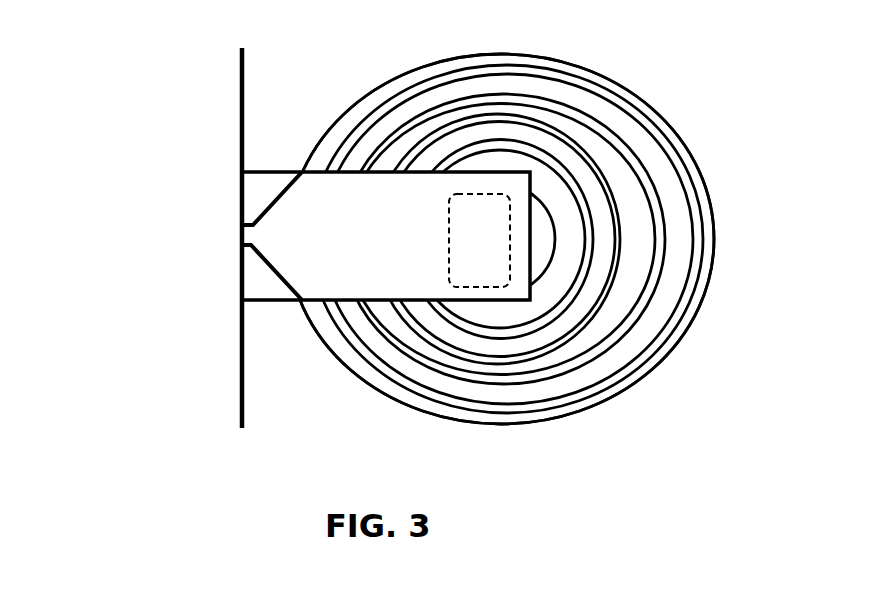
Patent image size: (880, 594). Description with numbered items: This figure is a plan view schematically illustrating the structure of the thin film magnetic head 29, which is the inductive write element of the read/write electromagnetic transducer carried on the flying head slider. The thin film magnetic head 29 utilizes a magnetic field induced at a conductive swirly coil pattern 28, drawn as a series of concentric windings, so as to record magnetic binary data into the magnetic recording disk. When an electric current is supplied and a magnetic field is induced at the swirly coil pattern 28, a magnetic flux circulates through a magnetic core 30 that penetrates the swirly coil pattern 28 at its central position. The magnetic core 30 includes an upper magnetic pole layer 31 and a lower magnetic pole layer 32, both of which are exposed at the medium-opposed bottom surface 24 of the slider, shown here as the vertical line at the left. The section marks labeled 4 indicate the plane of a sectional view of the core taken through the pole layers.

The bottom surface 24 is at (242, 68).
The swirly coil pattern 28 is at (674, 131).
The thin film magnetic head 29 is at (345, 92).
The magnetic core 30 is at (211, 246).
The upper magnetic pole layer 31 is at (278, 250).
The lower magnetic pole layer 32 is at (258, 287).
The section line 4- 4 is at (27, 233).